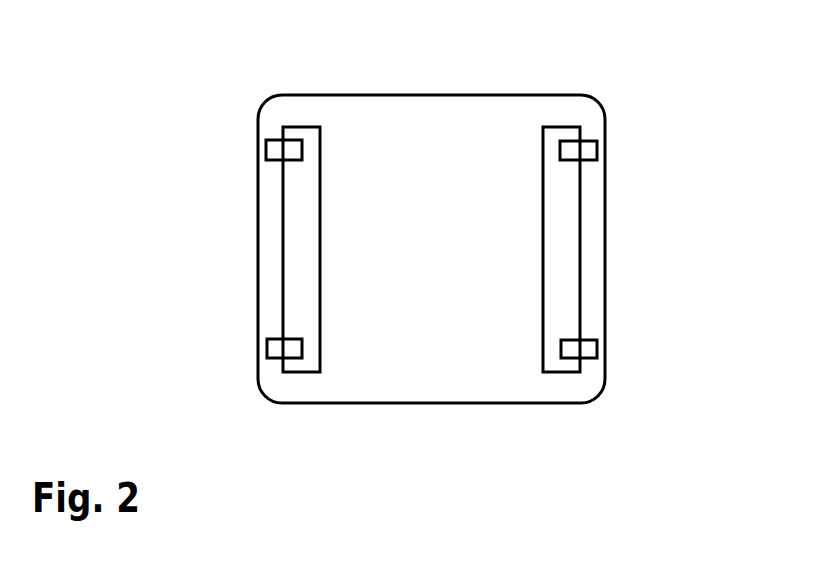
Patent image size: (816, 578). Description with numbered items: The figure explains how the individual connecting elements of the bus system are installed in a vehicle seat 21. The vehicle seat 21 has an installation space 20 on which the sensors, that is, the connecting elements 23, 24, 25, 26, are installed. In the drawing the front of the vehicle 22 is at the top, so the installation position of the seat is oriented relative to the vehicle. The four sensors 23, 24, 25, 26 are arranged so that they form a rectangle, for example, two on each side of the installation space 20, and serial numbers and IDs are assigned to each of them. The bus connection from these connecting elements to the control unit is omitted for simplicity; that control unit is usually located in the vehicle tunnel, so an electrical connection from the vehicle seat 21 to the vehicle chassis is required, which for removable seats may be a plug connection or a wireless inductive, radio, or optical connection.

The installation space 20 is at (560, 300).
The vehicle seat 21 is at (446, 194).
The front of the vehicle 22 is at (446, 41).
The connecting element 23 is at (285, 149).
The connecting element 24 is at (285, 348).
The connecting element 25 is at (578, 150).
The connecting element 26 is at (578, 346).